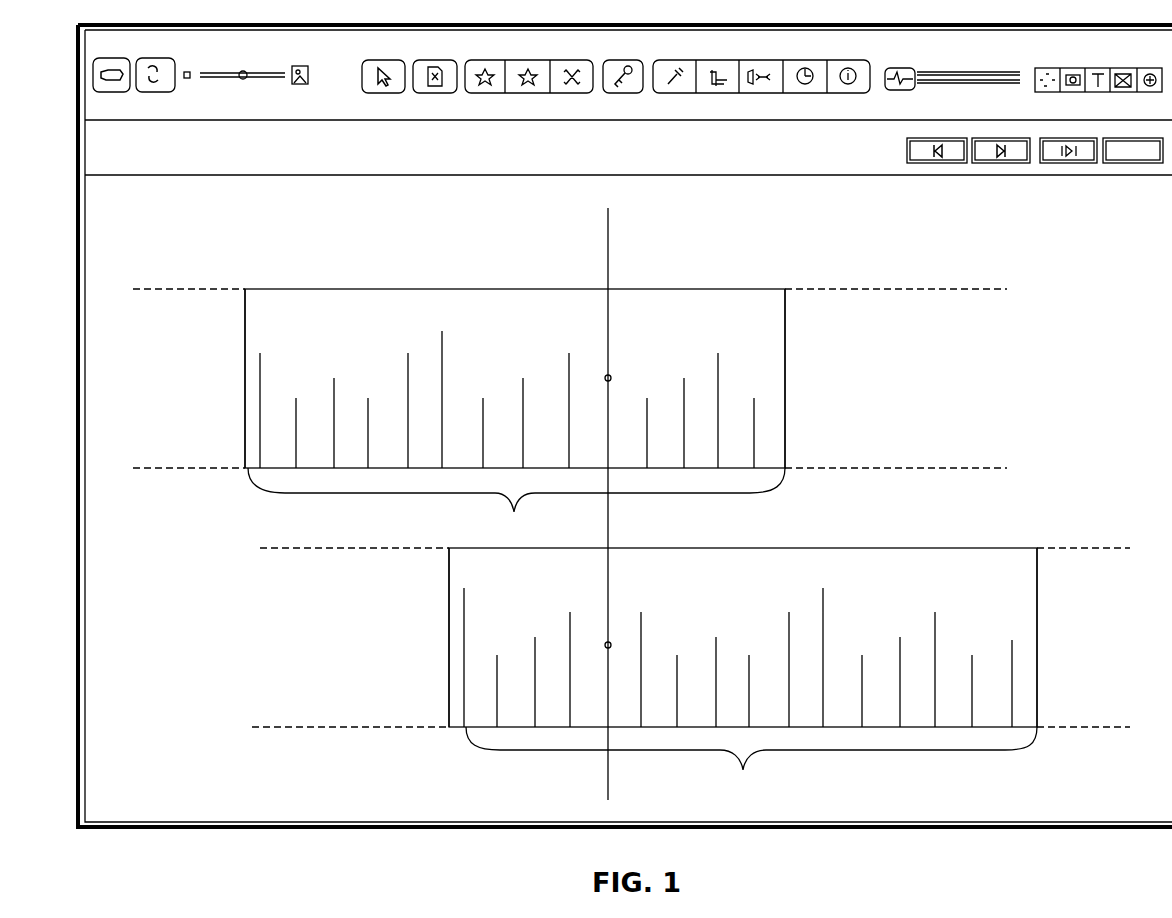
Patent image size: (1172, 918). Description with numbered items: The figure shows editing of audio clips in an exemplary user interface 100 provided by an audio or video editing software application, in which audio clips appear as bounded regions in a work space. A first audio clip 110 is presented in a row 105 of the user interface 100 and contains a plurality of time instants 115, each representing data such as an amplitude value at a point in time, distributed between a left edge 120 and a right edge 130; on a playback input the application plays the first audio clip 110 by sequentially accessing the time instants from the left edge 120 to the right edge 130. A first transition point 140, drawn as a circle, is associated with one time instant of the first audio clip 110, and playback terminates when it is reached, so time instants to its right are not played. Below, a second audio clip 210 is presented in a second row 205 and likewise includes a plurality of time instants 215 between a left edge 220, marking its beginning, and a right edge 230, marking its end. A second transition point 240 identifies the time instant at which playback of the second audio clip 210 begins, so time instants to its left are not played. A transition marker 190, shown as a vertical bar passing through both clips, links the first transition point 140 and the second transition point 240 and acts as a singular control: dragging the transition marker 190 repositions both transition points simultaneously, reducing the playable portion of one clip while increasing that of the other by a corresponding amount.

The user interface 100 is at (1089, 239).
The row 105 is at (912, 448).
The first audio clip 110 is at (456, 289).
The plurality of time instants 115 is at (516, 508).
The left edge 120 is at (245, 381).
The right edge 130 is at (785, 383).
The first transition point 140 is at (610, 376).
The transition marker 190 is at (608, 250).
The second row 205 is at (387, 709).
The second audio clip 210 is at (887, 548).
The plurality of time instants 215 is at (751, 770).
The left edge 220 is at (449, 632).
The right edge 230 is at (1037, 650).
The second transition point 240 is at (609, 642).